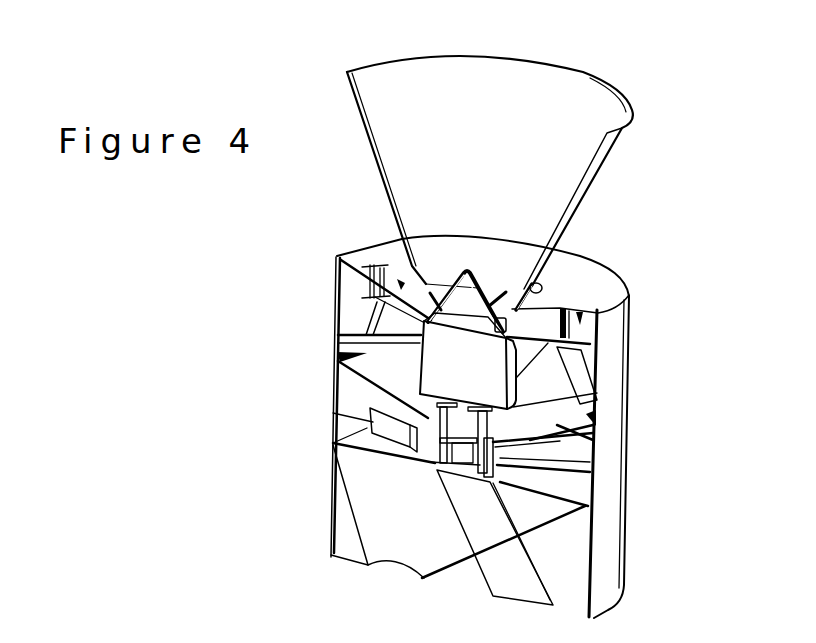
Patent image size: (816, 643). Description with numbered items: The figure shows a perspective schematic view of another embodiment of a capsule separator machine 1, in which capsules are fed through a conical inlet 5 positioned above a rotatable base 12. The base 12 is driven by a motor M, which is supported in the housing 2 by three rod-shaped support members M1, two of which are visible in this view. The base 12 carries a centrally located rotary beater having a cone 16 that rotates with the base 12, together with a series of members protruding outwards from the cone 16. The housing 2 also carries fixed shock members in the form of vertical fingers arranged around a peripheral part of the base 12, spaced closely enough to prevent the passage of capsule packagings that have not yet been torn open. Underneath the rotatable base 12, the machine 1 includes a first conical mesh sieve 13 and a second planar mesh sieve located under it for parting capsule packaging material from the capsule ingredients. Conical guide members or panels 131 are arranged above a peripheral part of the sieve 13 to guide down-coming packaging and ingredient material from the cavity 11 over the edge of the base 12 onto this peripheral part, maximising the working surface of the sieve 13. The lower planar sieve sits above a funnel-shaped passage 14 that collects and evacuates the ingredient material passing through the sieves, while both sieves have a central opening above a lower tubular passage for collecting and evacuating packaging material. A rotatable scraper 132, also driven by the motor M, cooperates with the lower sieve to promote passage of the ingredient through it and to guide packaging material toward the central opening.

The machine 1 is at (262, 65).
The housing 2 is at (596, 330).
The conical inlet 5 is at (588, 72).
The cavity 11 is at (385, 258).
The rotatable base 12 is at (362, 296).
The first conical mesh sieve 13 is at (535, 422).
The funnel-shaped passage 14 is at (535, 512).
The cone 16 is at (470, 268).
The motor M is at (513, 363).
The support members M1 is at (357, 341).
The conical guide members 131 is at (580, 376).
The rotatable scraper 132 is at (387, 427).